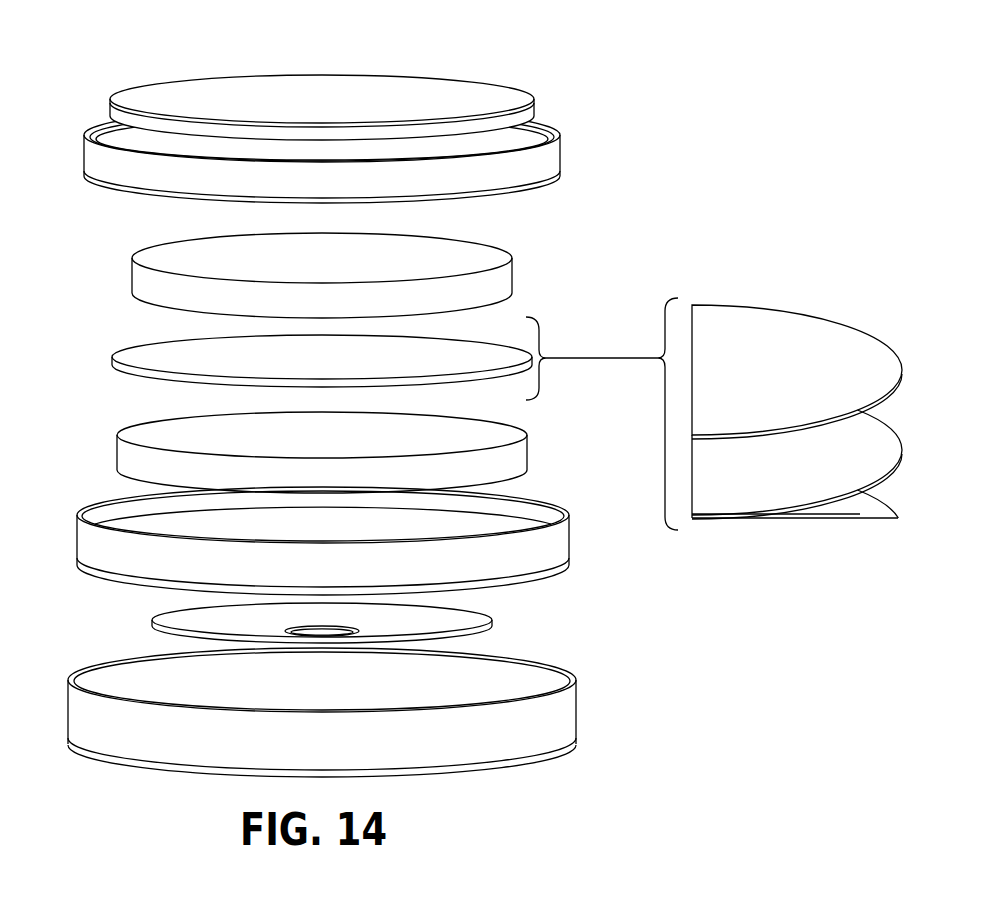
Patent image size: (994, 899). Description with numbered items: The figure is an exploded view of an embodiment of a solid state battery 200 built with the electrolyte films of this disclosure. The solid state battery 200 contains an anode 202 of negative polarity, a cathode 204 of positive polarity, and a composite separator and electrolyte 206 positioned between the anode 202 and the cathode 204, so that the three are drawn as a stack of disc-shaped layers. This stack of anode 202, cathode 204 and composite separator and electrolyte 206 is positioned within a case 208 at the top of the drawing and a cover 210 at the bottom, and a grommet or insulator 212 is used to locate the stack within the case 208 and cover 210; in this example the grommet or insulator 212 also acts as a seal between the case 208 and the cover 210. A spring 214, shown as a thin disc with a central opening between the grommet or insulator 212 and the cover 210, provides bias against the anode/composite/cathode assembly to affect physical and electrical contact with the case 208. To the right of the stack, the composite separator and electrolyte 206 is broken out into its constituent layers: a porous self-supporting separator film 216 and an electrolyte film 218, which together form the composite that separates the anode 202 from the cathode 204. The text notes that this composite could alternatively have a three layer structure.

The multi-layer assembly 200 is at (678, 121).
The disc layer 202 is at (520, 267).
The disc layer 204 is at (532, 452).
The thin disc layer 206 is at (110, 355).
The top cap 208 is at (83, 126).
The base housing 210 is at (580, 729).
The ring 212 is at (74, 543).
The apertured disc 214 is at (496, 631).
The half disc layer 216 is at (905, 430).
The half disc layer 218 is at (797, 310).